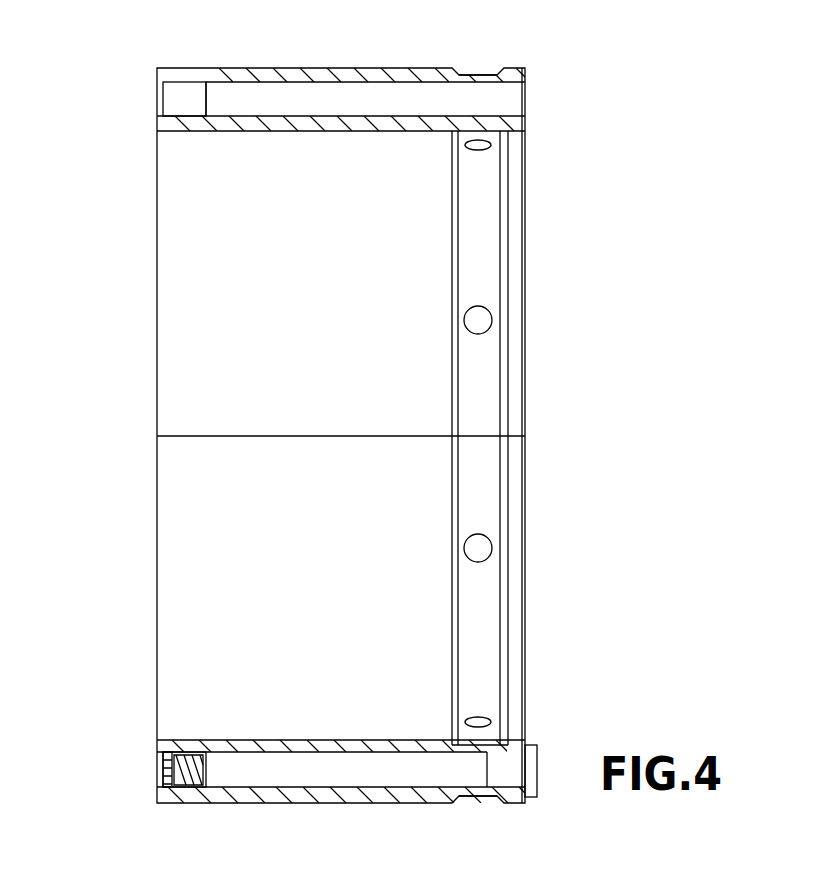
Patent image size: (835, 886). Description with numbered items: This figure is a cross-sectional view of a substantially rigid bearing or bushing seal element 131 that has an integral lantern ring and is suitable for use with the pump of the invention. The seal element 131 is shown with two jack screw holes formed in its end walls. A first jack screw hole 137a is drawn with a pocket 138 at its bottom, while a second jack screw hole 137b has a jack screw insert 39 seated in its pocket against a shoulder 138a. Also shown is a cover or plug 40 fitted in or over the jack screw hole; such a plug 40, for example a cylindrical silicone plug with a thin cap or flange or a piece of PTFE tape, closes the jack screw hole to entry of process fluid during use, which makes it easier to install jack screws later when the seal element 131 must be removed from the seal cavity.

The bearing or bushing seal element 131 is at (137, 260).
The pocket 138 is at (180, 92).
The shoulder 138a is at (203, 82).
The first jack screw hole 137a is at (483, 92).
The second jack screw hole 137b is at (412, 776).
The jack screw insert 39 is at (178, 776).
The plug 40 is at (538, 760).